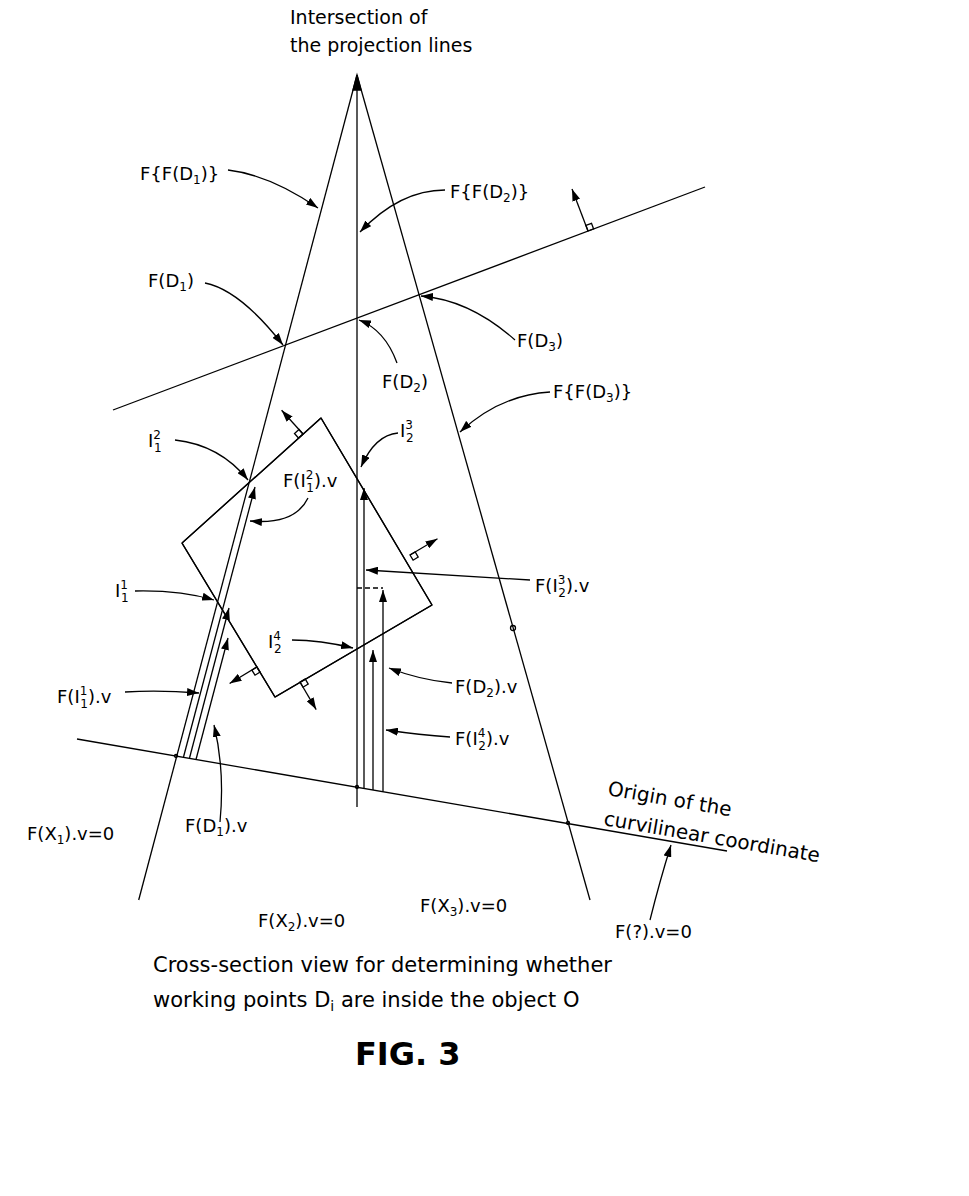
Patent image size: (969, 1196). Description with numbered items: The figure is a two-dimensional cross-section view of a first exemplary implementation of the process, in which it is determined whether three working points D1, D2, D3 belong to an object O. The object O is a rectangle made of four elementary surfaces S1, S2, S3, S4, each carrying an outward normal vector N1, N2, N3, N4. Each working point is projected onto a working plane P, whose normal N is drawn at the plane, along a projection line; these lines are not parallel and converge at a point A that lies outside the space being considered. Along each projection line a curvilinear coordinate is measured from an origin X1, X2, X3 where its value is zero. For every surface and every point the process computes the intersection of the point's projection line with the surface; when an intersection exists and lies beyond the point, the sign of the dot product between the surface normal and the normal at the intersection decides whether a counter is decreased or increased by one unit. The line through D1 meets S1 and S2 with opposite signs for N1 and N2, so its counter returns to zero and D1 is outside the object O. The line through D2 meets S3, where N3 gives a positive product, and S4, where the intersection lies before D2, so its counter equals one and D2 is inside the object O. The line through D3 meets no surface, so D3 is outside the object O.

The intersection point of the projection lines A is at (364, 75).
The working plane P is at (675, 197).
The normal of the working plane N is at (583, 204).
The object O is at (389, 541).
The working point D1 is at (208, 628).
The working point D2 is at (353, 588).
The working point D3 is at (519, 628).
The elementary surface S1 is at (181, 558).
The elementary surface S2 is at (192, 530).
The elementary surface S3 is at (382, 515).
The elementary surface S4 is at (338, 664).
The normal vector of surface S1 N1 is at (243, 693).
The normal vector of surface S2 N2 is at (293, 412).
The normal vector of surface S3 N3 is at (434, 551).
The normal vector of surface S4 N4 is at (303, 709).
The origin of the curvilinear coordinate X1 is at (172, 757).
The origin of the curvilinear coordinate X2 is at (354, 791).
The origin of the curvilinear coordinate X3 is at (564, 826).